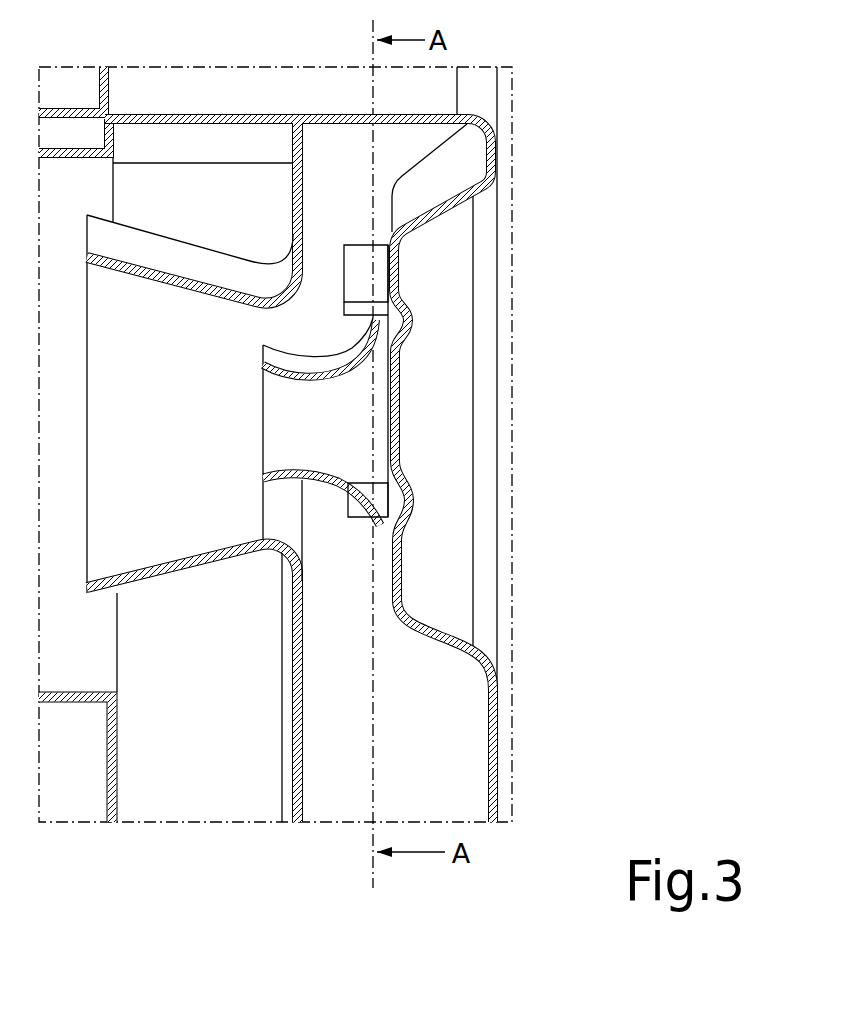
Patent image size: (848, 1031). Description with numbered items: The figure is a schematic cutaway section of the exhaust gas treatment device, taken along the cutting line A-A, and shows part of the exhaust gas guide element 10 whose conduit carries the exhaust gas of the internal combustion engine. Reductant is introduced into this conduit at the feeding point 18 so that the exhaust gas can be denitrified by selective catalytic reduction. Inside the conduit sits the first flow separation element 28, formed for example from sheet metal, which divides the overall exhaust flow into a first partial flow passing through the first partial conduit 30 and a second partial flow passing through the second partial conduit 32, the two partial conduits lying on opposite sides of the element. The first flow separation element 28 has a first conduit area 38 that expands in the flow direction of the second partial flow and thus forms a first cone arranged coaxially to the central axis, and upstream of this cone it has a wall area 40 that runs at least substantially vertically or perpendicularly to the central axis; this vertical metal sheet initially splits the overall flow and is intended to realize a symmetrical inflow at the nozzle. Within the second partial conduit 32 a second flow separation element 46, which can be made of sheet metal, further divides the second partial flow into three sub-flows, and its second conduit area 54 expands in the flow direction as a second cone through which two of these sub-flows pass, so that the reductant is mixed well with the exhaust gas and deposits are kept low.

The exhaust gas guide element 10 is at (452, 70).
The feeding point 18 is at (460, 380).
The first flow separation element 28 is at (202, 252).
The first partial conduit 30 is at (181, 750).
The second partial conduit 32 is at (352, 750).
The first conduit area 38 is at (133, 252).
The wall area 40 is at (312, 143).
The second flow separation element 46 is at (327, 489).
The second conduit area 54 is at (283, 487).